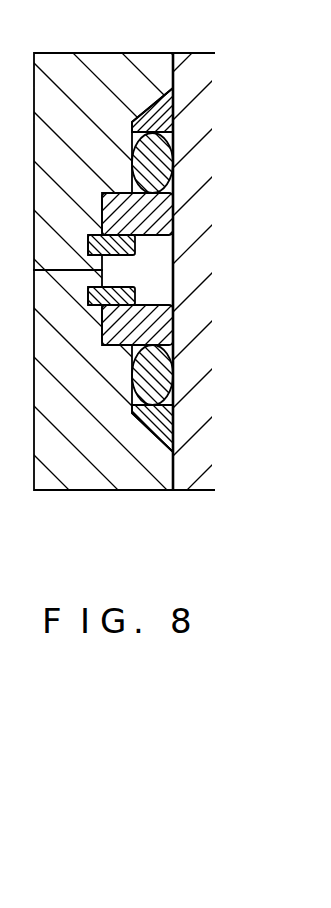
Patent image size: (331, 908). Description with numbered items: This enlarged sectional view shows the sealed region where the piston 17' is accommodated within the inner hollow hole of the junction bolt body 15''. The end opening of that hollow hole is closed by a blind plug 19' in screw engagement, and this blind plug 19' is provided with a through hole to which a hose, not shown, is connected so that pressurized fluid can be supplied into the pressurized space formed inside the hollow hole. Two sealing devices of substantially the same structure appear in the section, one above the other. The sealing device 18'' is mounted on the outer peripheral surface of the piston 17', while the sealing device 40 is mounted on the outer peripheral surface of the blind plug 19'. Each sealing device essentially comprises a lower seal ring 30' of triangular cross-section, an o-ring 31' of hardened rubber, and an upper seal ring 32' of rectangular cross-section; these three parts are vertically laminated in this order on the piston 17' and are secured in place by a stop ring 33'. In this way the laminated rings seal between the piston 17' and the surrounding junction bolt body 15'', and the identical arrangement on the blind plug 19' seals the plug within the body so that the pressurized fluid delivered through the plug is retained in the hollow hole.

The blind plug 19' is at (165, 251).
The piston 17' is at (165, 288).
The junction bolt body 15'' is at (165, 288).
The sealing device 40 is at (180, 153).
The stop ring 33' is at (166, 288).
The upper seal ring 32' is at (162, 325).
The sealing device 18'' is at (170, 380).
The o-ring 31' is at (168, 380).
The lower seal ring 30' is at (174, 430).